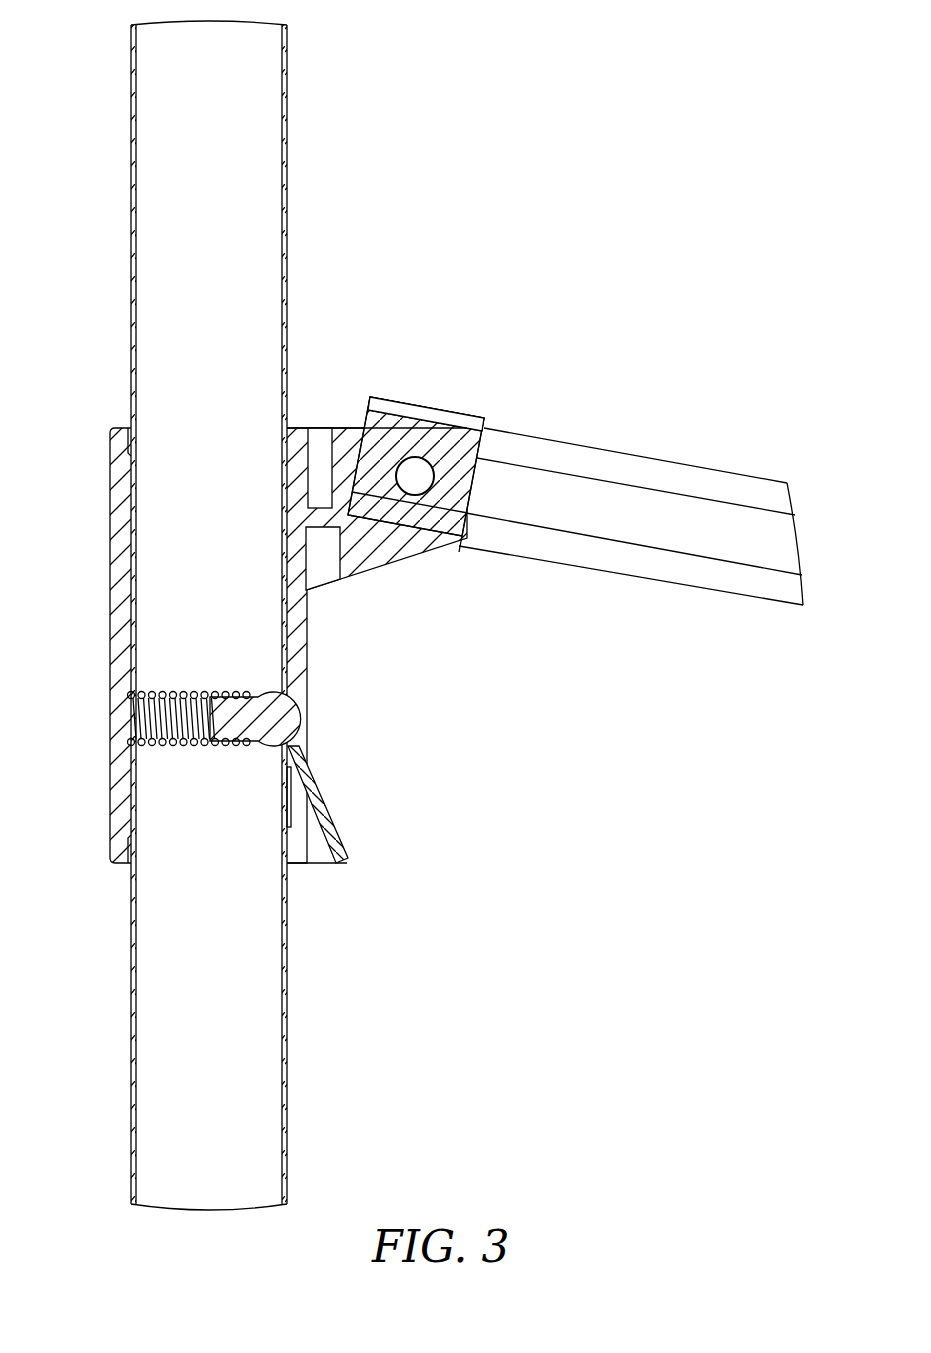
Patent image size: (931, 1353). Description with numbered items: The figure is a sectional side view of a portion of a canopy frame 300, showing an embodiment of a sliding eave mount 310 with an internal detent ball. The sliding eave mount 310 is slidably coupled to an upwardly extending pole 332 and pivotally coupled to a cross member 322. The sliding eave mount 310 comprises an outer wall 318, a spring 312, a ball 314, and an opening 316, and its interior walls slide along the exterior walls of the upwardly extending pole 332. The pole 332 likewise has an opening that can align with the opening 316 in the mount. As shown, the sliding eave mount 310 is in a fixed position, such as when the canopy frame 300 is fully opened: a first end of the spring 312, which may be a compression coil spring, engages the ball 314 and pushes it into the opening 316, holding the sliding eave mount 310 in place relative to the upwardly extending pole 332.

The canopy frame 300 is at (503, 240).
The sliding eave mount 310 is at (110, 778).
The spring 312 is at (147, 718).
The ball 314 is at (300, 700).
The opening 316 is at (310, 735).
The outer wall 318 is at (333, 812).
The cross member 322 is at (614, 452).
The upwardly extending pole 332 is at (288, 968).